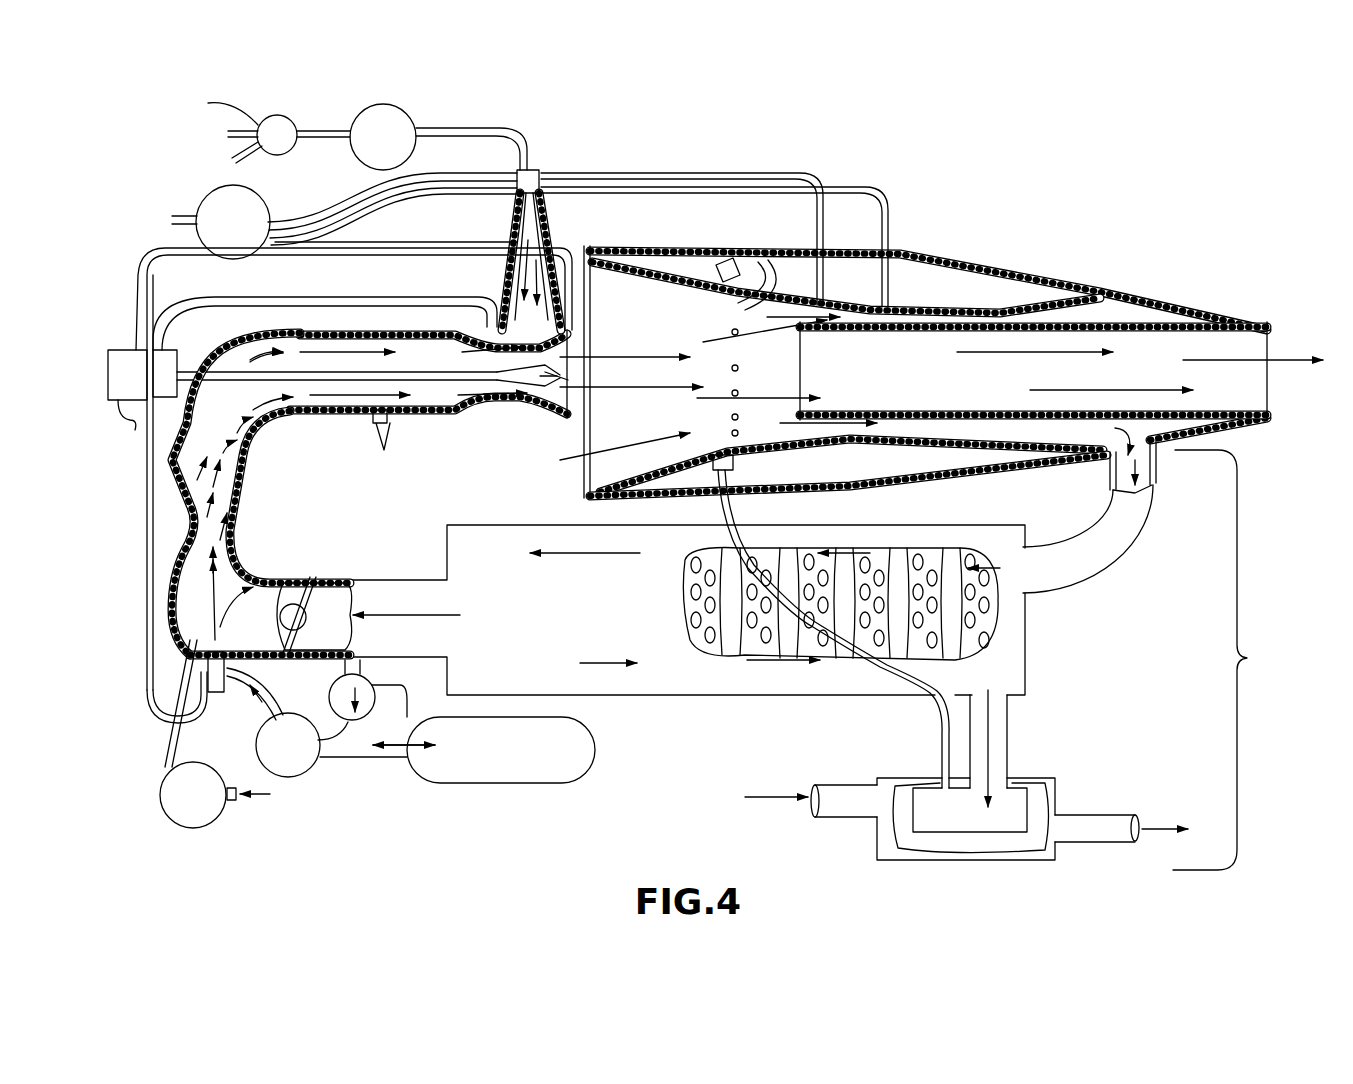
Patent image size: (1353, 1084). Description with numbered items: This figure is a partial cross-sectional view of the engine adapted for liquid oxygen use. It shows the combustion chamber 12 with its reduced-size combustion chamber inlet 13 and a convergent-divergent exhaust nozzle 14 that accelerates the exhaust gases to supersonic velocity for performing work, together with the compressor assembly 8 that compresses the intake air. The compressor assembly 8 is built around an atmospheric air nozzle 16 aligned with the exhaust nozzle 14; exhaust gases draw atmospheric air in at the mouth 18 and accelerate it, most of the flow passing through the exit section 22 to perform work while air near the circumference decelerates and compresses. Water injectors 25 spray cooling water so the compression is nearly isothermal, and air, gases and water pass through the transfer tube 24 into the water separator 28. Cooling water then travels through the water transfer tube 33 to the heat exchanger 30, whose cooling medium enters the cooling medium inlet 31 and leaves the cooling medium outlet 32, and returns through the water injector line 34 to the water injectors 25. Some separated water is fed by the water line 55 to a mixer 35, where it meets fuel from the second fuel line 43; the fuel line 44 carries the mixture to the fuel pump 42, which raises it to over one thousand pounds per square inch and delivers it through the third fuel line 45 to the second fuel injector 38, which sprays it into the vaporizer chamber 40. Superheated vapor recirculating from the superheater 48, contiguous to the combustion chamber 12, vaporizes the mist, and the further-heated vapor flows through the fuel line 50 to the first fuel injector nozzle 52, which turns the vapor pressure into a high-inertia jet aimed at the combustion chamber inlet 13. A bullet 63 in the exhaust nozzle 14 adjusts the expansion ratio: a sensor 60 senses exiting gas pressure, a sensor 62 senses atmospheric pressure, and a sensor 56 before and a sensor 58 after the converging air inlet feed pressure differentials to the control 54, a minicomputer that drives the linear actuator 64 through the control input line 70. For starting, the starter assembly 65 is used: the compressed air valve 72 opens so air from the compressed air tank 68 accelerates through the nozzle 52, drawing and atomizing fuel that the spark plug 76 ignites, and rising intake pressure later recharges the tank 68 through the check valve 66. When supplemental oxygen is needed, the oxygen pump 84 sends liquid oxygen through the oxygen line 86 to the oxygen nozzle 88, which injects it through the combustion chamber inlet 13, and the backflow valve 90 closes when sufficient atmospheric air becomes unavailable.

The compressor assembly 8 is at (1225, 660).
The combustion chamber 12 is at (302, 390).
The combustion chamber inlet 13 is at (236, 532).
The exhaust nozzle 14 is at (553, 413).
The atmospheric air nozzle 16 is at (637, 275).
The mouth 18 is at (886, 466).
The exit section 22 is at (1253, 410).
The transfer tube 24 is at (1157, 493).
The water injectors 25 is at (737, 462).
The water separator 28 is at (990, 500).
The heat exchanger 30 is at (1033, 777).
The cooling medium inlet 31 is at (862, 805).
The cooling medium outlet 32 is at (1090, 817).
The water transfer tube 33 is at (1000, 718).
The water injector line 34 is at (937, 727).
The mixer 35 is at (272, 120).
The second fuel injector 38 is at (540, 170).
The vaporizer chamber 40 is at (500, 300).
The fuel pump 42 is at (367, 158).
The second fuel line 43 is at (208, 102).
The fuel line 44 is at (314, 131).
The third fuel line 45 is at (486, 128).
The superheater 48 is at (490, 415).
The fuel line 50 is at (274, 300).
The first fuel injector nozzle 52 is at (222, 695).
The control 54 is at (237, 186).
The water line 55 is at (221, 139).
The sensor 56 is at (818, 226).
The sensor 58 is at (893, 248).
The sensor 60 is at (556, 325).
The sensor 62 is at (172, 224).
The bullet 63 is at (553, 380).
The linear actuator 64 is at (122, 343).
The starter assembly 65 is at (442, 803).
The check valve 66 is at (375, 705).
The compressed air tank 68 is at (592, 760).
The control input line 70 is at (147, 303).
The compressed air valve 72 is at (310, 757).
The spark plug 76 is at (392, 435).
The oxygen pump 84 is at (215, 835).
The oxygen line 86 is at (166, 800).
The oxygen nozzle 88 is at (188, 655).
The backflow valve 90 is at (300, 578).